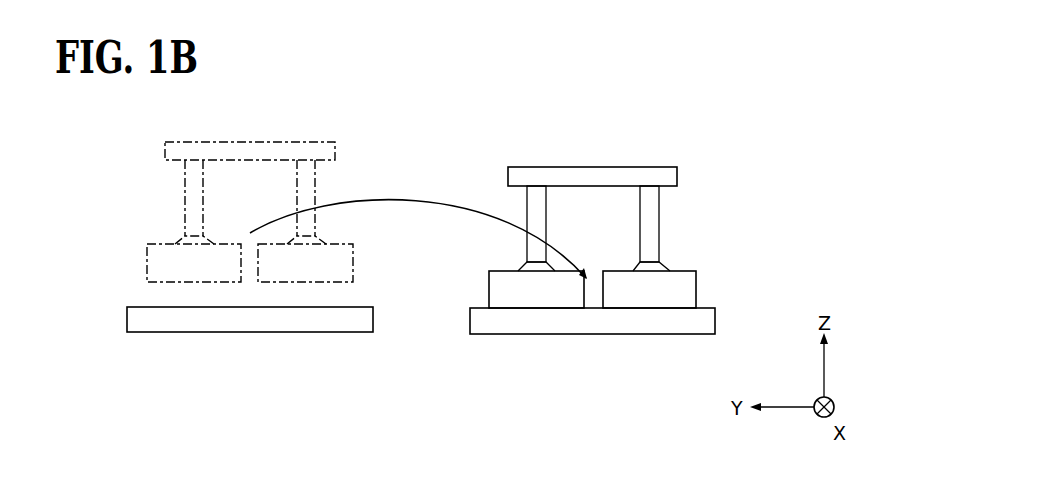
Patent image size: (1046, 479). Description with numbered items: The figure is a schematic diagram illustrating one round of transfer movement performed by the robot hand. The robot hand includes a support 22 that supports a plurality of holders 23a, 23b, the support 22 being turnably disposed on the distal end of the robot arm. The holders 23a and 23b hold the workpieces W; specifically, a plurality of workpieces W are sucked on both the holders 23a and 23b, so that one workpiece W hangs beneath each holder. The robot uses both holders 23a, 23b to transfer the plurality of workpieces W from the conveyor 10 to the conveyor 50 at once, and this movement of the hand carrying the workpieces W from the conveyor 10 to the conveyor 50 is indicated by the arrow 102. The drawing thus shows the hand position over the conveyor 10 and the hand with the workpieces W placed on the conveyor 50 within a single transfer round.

The conveyor 10 is at (103, 314).
The arrow 102 is at (404, 197).
The support 22 is at (632, 167).
The holder 23a is at (546, 207).
The holder 23b is at (659, 207).
The workpiece W is at (489, 284).
The conveyor 50 is at (735, 317).